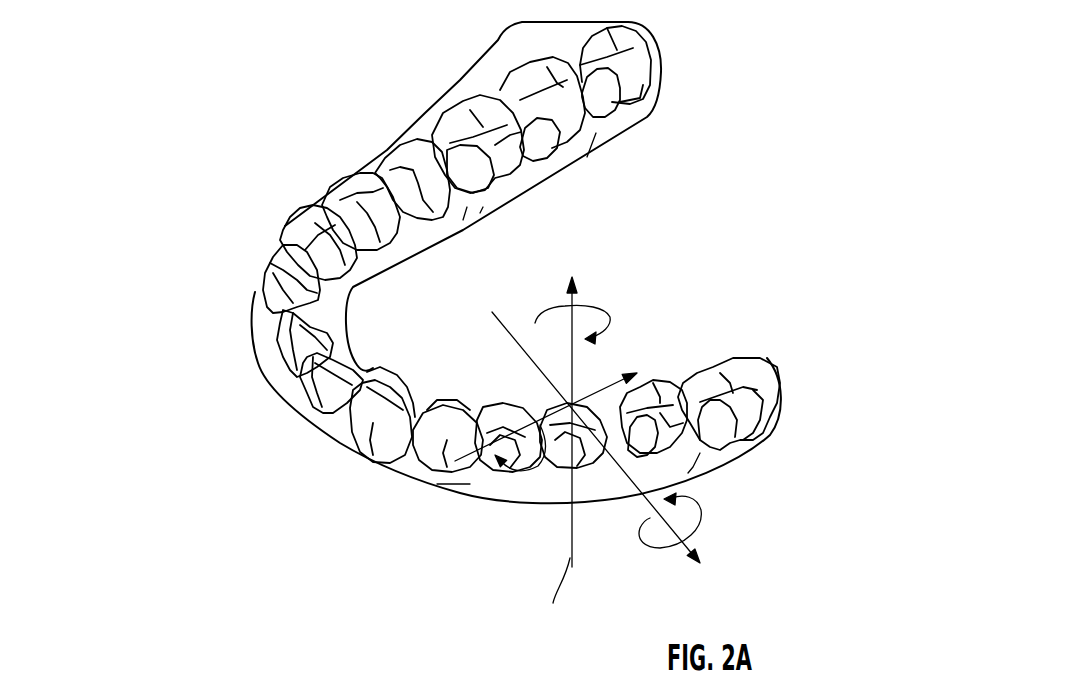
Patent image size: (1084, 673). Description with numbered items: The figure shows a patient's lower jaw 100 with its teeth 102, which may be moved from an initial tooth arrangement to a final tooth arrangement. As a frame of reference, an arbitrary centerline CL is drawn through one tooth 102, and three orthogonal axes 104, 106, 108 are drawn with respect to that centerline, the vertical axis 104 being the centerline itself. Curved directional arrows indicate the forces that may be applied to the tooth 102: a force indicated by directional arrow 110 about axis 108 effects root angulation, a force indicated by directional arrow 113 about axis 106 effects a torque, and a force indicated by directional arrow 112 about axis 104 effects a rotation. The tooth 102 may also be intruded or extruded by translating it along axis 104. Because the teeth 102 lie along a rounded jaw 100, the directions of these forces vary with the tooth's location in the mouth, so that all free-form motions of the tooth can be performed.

The lower jaw 100 is at (268, 374).
The teeth 102 is at (657, 382).
The axis (centerline) 104 is at (568, 537).
The axis 106 is at (492, 457).
The axis 108 is at (683, 543).
The directional arrow 110 is at (657, 547).
The directional arrow 112 is at (545, 307).
The directional arrow 113 is at (537, 443).